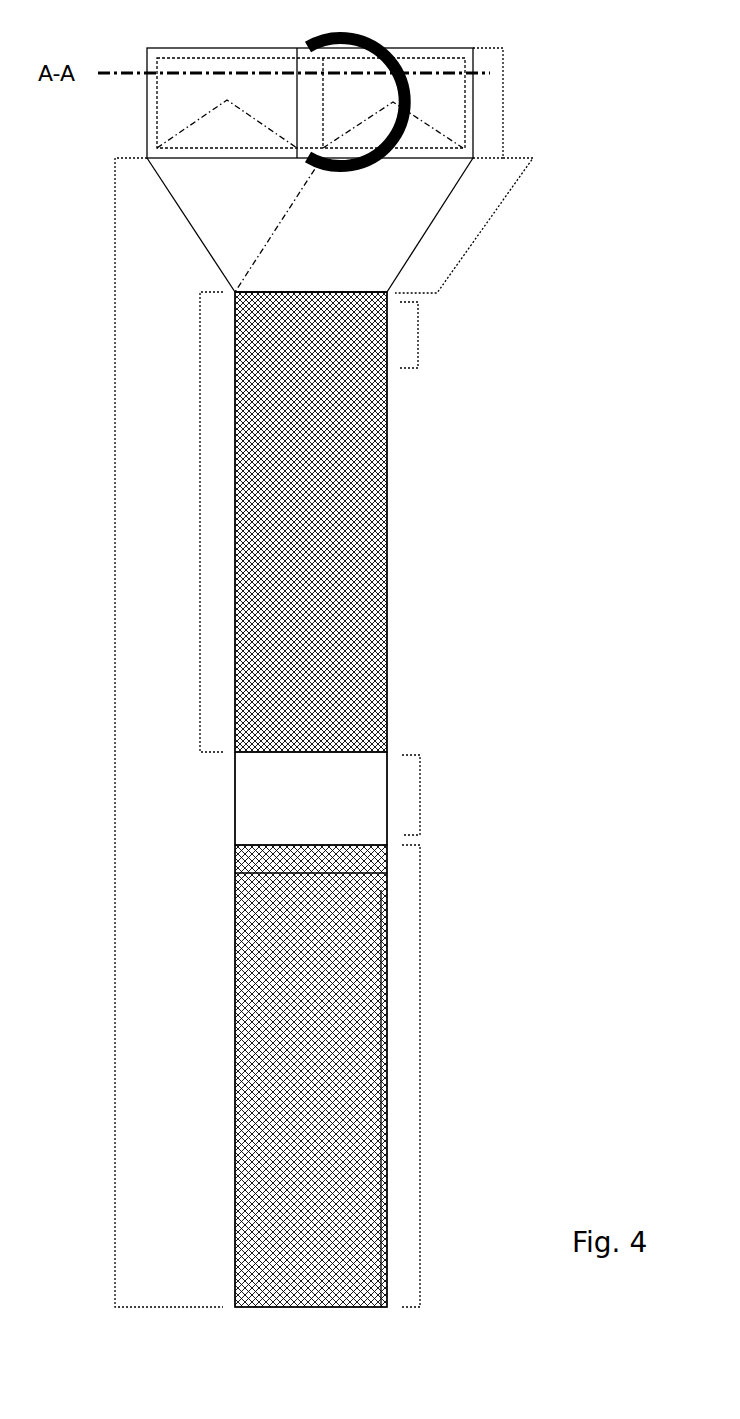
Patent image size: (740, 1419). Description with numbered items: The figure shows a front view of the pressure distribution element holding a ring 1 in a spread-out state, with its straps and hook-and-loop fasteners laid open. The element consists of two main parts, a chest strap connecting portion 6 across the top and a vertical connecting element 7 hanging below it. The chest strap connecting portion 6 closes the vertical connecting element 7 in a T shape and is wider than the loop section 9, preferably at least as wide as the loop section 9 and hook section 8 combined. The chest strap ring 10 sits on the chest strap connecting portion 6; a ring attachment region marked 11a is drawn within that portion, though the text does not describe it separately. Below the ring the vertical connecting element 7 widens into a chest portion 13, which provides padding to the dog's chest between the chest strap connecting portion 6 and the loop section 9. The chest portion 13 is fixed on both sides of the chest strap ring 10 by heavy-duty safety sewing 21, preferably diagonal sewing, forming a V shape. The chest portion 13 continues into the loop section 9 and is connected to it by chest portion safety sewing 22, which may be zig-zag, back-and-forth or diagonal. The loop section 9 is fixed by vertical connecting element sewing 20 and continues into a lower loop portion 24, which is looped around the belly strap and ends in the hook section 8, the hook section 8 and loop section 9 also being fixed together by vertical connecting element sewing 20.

The pressure distribution element holding a ring 1 is at (465, 473).
The chest strap connecting portion 6 is at (508, 103).
The vertical connecting element 7 is at (115, 724).
The hook section 8 is at (425, 1078).
The loop section 9 is at (200, 520).
The chest strap ring 10 is at (380, 38).
The partition wall 11a is at (297, 50).
The chest portion 13 is at (480, 228).
The vertical connecting element sewing 20 is at (235, 682).
The safety sewing 21 is at (197, 118).
The chest portion safety sewing 22 is at (425, 333).
The lower loop portion 24 is at (425, 795).